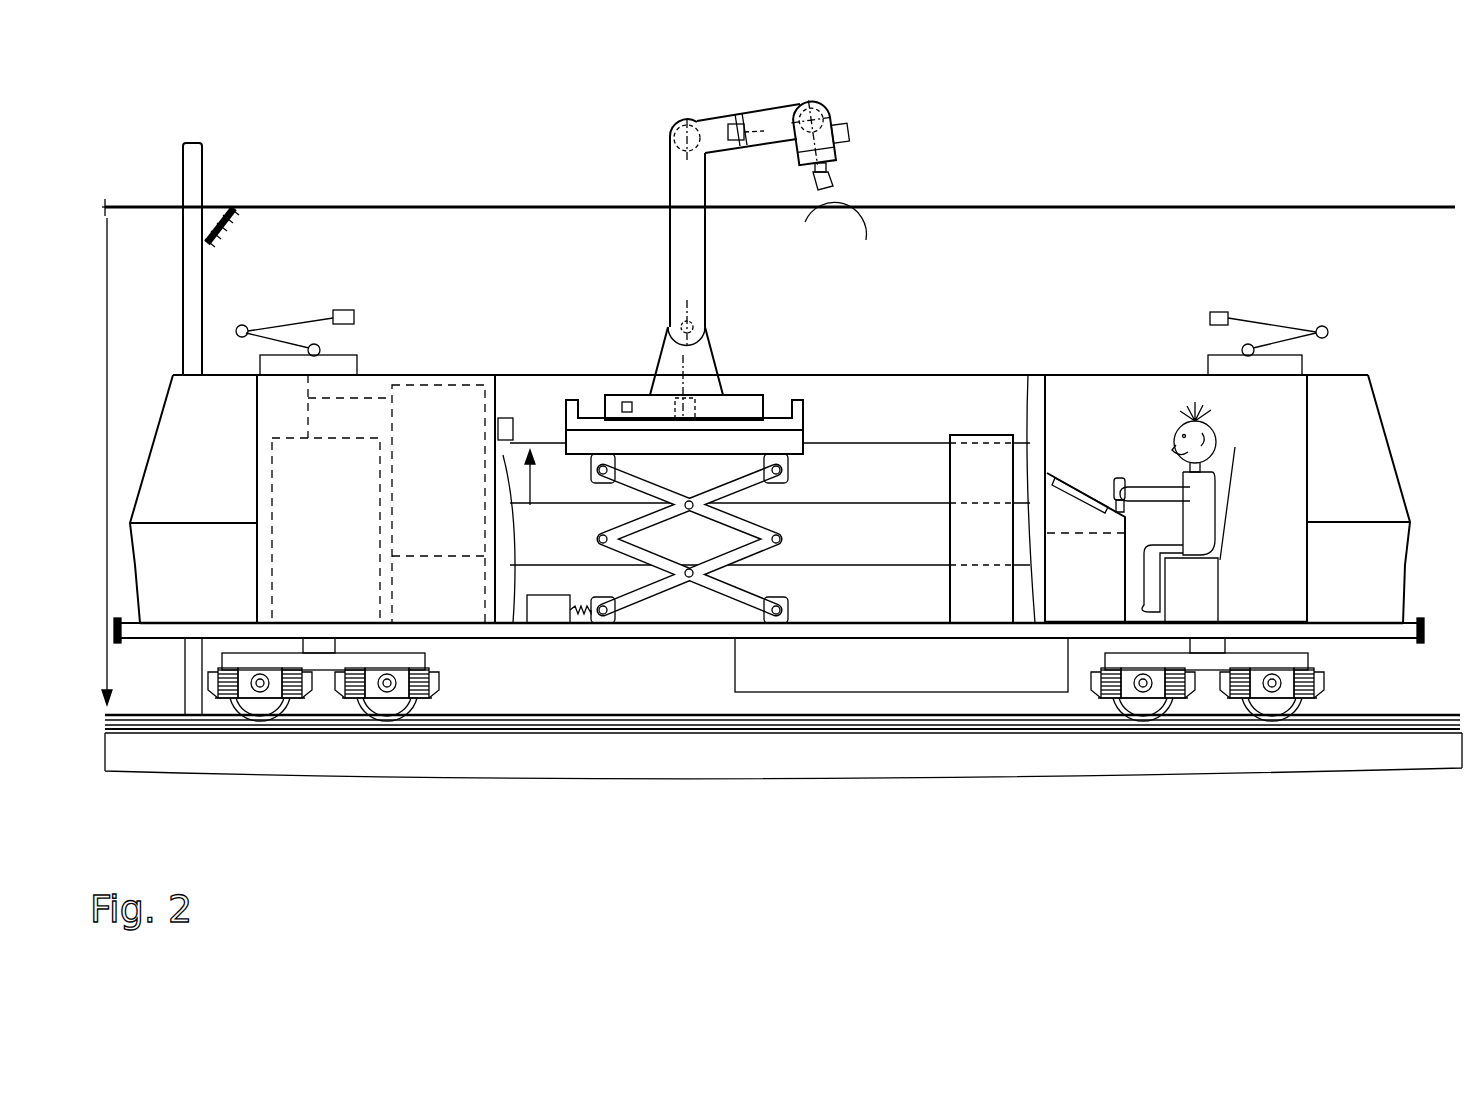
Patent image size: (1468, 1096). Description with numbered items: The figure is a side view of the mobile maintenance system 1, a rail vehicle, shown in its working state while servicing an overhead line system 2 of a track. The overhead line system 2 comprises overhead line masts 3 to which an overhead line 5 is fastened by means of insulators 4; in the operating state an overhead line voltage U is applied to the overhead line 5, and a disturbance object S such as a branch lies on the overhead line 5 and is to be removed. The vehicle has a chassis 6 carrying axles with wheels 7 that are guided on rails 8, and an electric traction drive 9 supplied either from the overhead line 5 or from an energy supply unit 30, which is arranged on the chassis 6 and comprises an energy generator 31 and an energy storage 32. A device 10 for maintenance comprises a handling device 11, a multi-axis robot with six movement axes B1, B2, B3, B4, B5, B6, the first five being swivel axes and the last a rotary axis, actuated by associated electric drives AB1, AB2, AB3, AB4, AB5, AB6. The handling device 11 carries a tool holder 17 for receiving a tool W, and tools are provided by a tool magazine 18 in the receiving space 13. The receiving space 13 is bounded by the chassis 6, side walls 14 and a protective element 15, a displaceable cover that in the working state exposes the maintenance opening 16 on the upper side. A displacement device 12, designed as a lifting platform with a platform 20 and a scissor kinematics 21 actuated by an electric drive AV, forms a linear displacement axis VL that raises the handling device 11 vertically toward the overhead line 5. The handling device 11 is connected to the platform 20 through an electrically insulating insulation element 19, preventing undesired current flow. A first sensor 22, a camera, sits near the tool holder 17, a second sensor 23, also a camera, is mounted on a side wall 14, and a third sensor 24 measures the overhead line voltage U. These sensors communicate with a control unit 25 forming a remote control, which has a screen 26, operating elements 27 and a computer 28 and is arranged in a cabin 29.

The mobile maintenance system 1 is at (1418, 412).
The overhead line system 2 is at (228, 182).
The overhead line mast 3 is at (190, 143).
The insulator 4 is at (217, 232).
The overhead line 5 is at (140, 207).
The chassis 6 is at (1342, 636).
The wheel 7 is at (1272, 707).
The rail 8 is at (1410, 721).
The electric traction drive 9 is at (303, 590).
The device 10 is at (565, 265).
The handling device 11 is at (684, 110).
The displacement device 12 is at (678, 605).
The receiving space 13 is at (556, 423).
The side wall 14 is at (1010, 400).
The protective element 15 is at (803, 423).
The maintenance opening 16 is at (996, 366).
The tool holder 17 is at (835, 166).
The tool magazine 18 is at (983, 607).
The insulation element 19 is at (920, 410).
The platform 20 is at (722, 449).
The scissor kinematics 21 is at (722, 588).
The first sensor 22 is at (832, 142).
The second sensor 23 is at (505, 416).
The third sensor 24 is at (627, 413).
The control unit 25 is at (1085, 620).
The screen 26 is at (1095, 513).
The operating elements 27 is at (1120, 478).
The computer 28 is at (1062, 602).
The cabin 29 is at (1255, 545).
The energy supply unit 30 is at (437, 625).
The energy generator 31 is at (430, 590).
The energy storage 32 is at (415, 525).
The movement axis B1 is at (682, 372).
The movement axis B2 is at (686, 322).
The movement axis B3 is at (685, 143).
The movement axis B4 is at (733, 130).
The movement axis B5 is at (802, 103).
The movement axis B6 is at (800, 132).
The electric drive AB1 is at (670, 400).
The electric drive AB2 is at (686, 322).
The electric drive AB3 is at (683, 135).
The electric drive AB4 is at (742, 143).
The electric drive AB5 is at (803, 106).
The electric drive AB6 is at (812, 152).
The tool W is at (828, 176).
The disturbance object S is at (858, 192).
The overhead line voltage U is at (98, 461).
The electric drive AV is at (513, 623).
The displacement axis VL is at (546, 477).